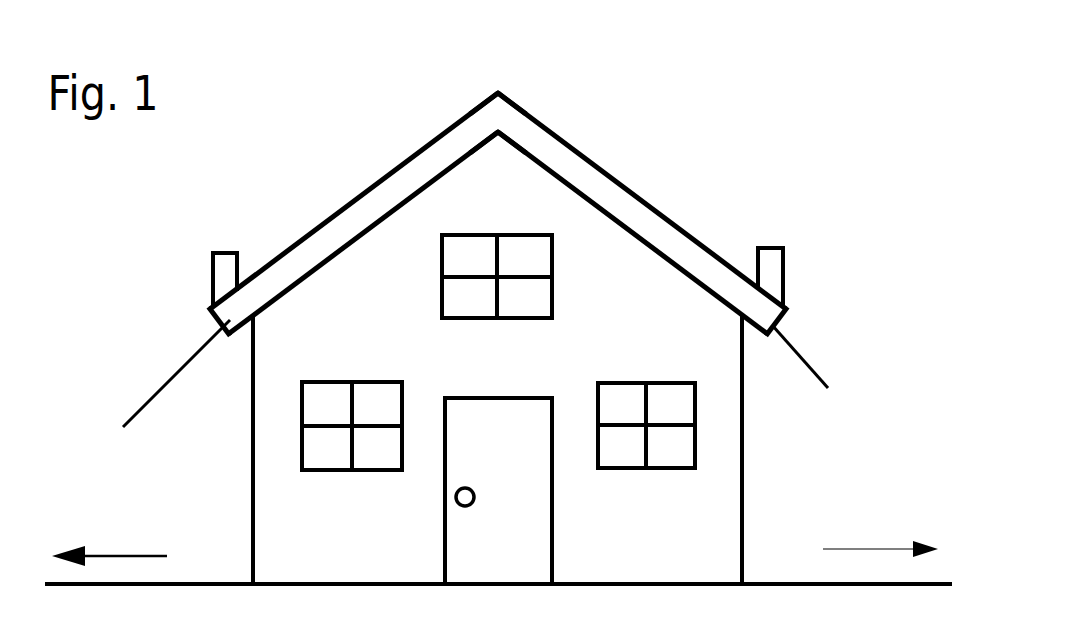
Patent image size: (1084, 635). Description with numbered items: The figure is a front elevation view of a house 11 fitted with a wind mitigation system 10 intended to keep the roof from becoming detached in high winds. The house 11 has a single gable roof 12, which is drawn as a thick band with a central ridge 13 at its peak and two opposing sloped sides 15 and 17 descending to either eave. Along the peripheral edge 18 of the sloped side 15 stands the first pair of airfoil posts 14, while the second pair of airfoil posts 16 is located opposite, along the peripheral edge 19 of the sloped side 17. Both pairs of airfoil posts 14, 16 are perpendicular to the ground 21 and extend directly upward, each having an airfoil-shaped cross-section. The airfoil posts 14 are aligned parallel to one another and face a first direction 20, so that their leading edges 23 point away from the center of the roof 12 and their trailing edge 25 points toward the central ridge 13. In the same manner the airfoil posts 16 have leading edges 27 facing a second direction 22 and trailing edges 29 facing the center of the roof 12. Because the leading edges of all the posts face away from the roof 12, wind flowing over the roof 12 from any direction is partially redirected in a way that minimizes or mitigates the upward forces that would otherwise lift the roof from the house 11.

The wind mitigation system 10 is at (835, 111).
The house 11 is at (634, 520).
The roof 12 is at (570, 145).
The central ridge 13 is at (492, 95).
The first pair of airfoil posts 14 is at (178, 246).
The sloped side 15 is at (353, 200).
The second pair of airfoil posts 16 is at (814, 243).
The sloped side 17 is at (652, 217).
The peripheral edge 18 is at (163, 384).
The peripheral edge 19 is at (808, 371).
The first direction 20 is at (110, 556).
The ground 21 is at (177, 584).
The second direction 22 is at (873, 549).
The leading edges 23 is at (211, 287).
The trailing edge 25 is at (238, 277).
The leading edges 27 is at (786, 283).
The trailing edges 29 is at (757, 267).